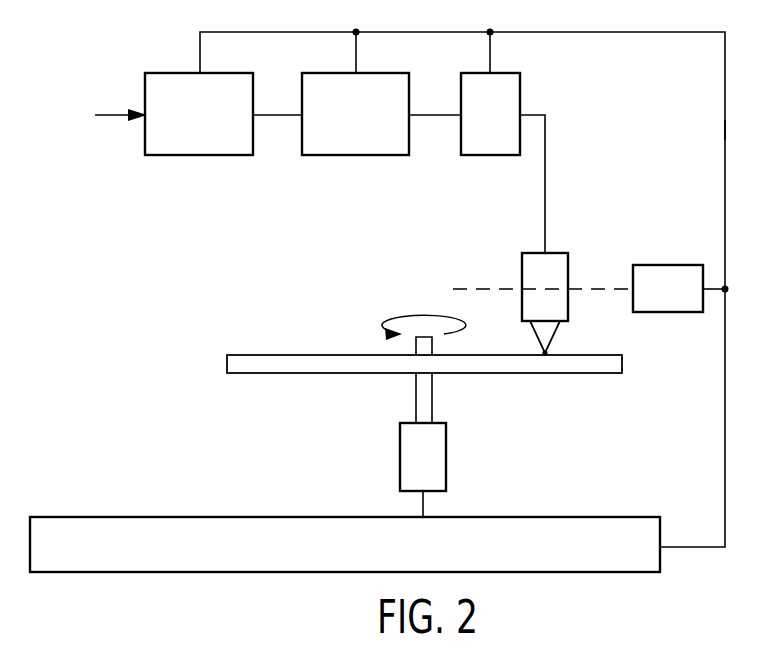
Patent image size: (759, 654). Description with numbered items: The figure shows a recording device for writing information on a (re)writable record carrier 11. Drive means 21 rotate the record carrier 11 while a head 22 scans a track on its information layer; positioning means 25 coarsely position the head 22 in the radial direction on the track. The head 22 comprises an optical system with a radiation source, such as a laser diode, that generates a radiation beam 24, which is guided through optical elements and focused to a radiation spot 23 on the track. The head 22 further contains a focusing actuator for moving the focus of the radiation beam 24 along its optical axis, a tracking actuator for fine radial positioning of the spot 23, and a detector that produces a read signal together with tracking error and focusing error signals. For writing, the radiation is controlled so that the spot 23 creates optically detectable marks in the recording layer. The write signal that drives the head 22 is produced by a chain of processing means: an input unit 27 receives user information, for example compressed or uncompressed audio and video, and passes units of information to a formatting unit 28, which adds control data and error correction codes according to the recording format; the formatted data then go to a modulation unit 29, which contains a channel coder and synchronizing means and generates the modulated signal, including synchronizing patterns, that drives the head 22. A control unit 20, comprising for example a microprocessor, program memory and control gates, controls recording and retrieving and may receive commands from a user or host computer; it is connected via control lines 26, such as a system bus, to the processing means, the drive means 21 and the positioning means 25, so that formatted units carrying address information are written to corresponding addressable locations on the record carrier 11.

The record carrier 11 is at (597, 366).
The control unit 20 is at (627, 525).
The drive means 21 is at (443, 446).
The head 22 is at (525, 272).
The radiation spot 23 is at (550, 351).
The radiation beam 24 is at (535, 335).
The positioning means 25 is at (668, 273).
The control lines 26 is at (722, 125).
The input unit 27 is at (198, 145).
The formatting unit 28 is at (348, 147).
The modulation unit 29 is at (488, 147).